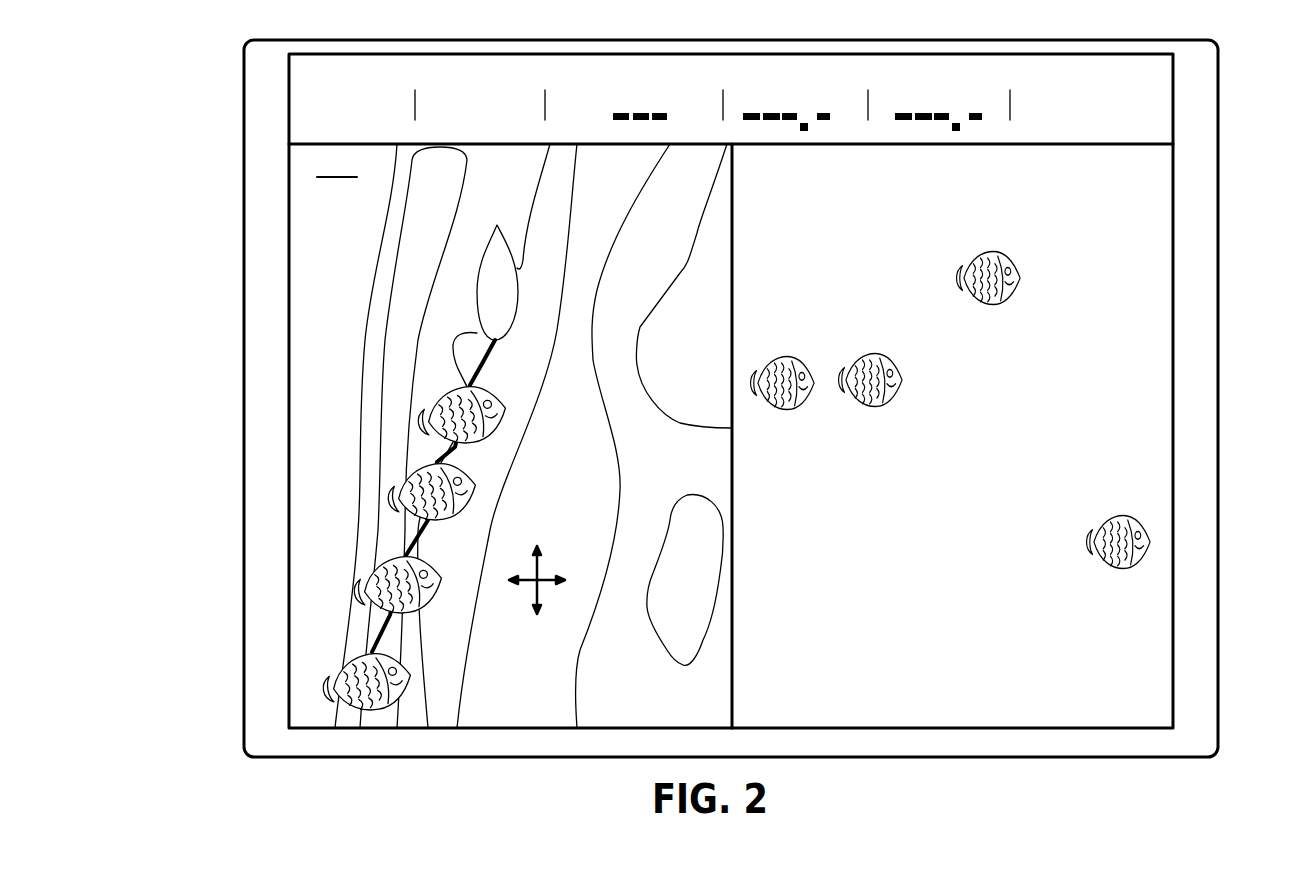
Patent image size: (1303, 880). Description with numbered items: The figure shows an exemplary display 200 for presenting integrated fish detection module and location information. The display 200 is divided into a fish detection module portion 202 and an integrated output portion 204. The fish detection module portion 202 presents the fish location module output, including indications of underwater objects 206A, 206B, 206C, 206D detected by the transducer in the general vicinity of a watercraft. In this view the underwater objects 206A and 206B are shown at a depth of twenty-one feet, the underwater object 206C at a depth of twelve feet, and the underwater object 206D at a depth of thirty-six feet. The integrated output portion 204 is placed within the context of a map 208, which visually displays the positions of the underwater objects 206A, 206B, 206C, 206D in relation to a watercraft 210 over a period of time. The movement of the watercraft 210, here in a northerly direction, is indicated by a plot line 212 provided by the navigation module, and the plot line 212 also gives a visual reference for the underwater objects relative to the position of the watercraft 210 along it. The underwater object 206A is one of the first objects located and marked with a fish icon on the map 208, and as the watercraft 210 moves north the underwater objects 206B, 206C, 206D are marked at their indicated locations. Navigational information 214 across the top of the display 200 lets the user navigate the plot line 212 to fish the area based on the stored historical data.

The display 200 is at (205, 63).
The fish detection module portion 202 is at (1143, 352).
The integrated output portion 204 is at (315, 312).
The underwater object 206A is at (337, 670).
The underwater object 206B is at (370, 570).
The underwater object 206C is at (407, 478).
The underwater object 206D is at (433, 397).
The map 208 is at (337, 166).
The watercraft 210 is at (482, 250).
The plot line 212 is at (487, 360).
The navigational information 214 is at (1155, 108).